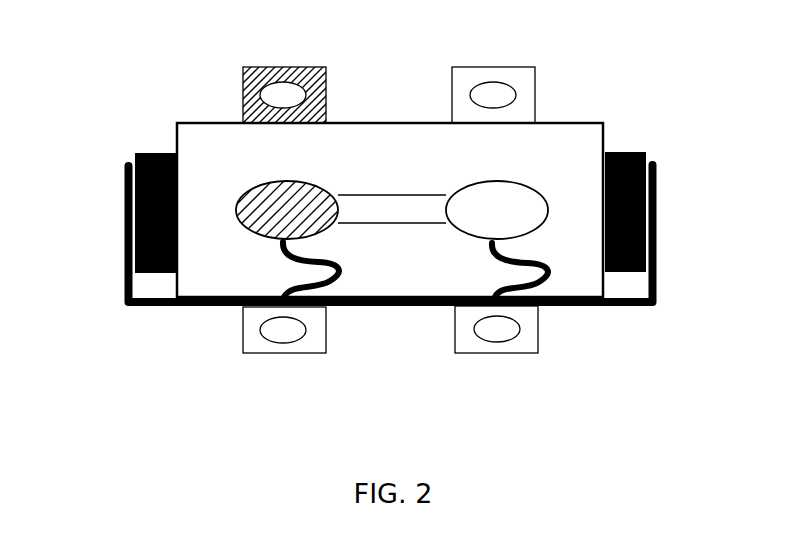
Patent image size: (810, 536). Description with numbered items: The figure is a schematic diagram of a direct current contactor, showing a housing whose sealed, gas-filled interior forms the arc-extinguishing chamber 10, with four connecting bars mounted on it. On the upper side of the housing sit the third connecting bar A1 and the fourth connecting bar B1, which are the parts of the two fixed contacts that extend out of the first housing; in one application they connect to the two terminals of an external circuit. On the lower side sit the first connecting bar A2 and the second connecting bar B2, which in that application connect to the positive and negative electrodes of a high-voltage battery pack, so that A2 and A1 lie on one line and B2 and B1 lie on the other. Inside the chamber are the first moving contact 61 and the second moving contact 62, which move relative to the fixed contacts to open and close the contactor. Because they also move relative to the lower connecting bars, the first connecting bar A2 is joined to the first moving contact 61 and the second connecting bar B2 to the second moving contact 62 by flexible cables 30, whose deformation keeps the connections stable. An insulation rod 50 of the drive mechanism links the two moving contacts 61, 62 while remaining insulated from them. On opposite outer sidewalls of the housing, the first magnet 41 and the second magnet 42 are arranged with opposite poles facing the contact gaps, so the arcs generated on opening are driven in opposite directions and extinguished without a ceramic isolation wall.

The arc-extinguishing chamber 10 is at (595, 130).
The flexible cable 30 is at (542, 278).
The first magnet 41 is at (133, 248).
The second magnet 42 is at (647, 243).
The insulation rod 50 is at (370, 208).
The first moving contact 61 is at (250, 183).
The second moving contact 62 is at (530, 185).
The third connecting bar A1 is at (265, 68).
The fourth connecting bar B1 is at (473, 67).
The first connecting bar A2 is at (262, 353).
The second connecting bar B2 is at (470, 353).